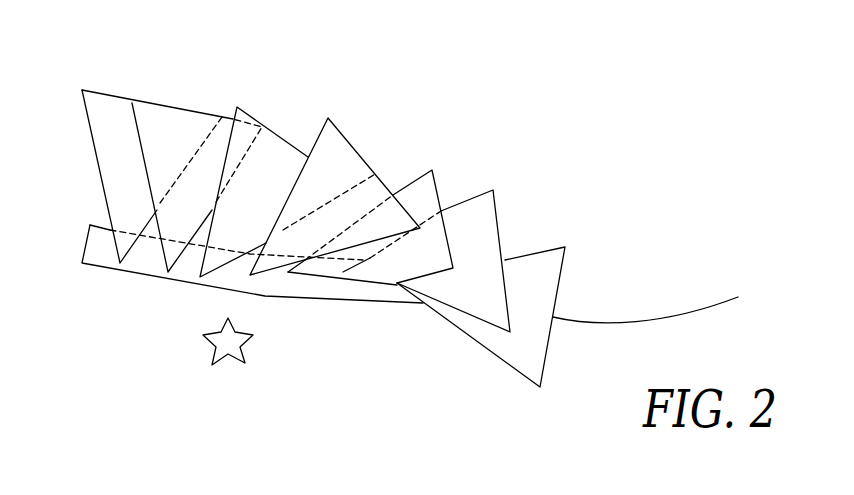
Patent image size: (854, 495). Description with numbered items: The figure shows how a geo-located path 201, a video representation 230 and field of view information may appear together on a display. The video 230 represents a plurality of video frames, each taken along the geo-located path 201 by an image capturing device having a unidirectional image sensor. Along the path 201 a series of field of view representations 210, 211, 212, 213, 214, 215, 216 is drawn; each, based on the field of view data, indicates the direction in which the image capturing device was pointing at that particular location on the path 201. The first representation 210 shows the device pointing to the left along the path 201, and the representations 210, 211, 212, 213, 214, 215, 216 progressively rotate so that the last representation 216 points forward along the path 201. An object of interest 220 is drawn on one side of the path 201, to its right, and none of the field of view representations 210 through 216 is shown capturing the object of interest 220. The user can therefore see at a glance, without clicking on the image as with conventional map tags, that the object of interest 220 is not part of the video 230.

The geo-located path 201 is at (647, 325).
The field of view representation 210 is at (108, 133).
The field of view representation 211 is at (190, 115).
The field of view representation 212 is at (268, 135).
The field of view representation 213 is at (343, 148).
The field of view representation 214 is at (427, 192).
The field of view representation 215 is at (490, 228).
The field of view representation 216 is at (553, 273).
The object of interest 220 is at (253, 335).
The video representation 230 is at (148, 265).